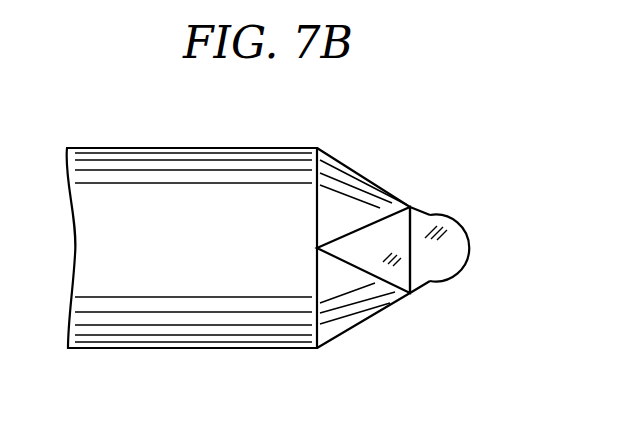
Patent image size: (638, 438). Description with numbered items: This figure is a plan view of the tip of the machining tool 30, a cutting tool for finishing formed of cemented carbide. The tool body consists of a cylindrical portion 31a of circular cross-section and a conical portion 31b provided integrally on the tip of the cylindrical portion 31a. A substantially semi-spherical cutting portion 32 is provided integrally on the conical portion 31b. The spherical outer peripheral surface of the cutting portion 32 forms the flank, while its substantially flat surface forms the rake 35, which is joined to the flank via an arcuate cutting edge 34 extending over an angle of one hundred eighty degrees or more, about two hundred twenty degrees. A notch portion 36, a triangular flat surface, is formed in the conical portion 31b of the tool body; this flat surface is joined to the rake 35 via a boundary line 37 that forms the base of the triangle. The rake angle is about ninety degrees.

The machining tool 30 is at (223, 180).
The cylindrical portion 31a is at (210, 320).
The conical portion 31b is at (353, 305).
The cutting portion 32 is at (429, 238).
The cutting edge 34 is at (473, 248).
The rake 35 is at (440, 250).
The notch portion 36 is at (385, 232).
The boundary line 37 is at (413, 240).